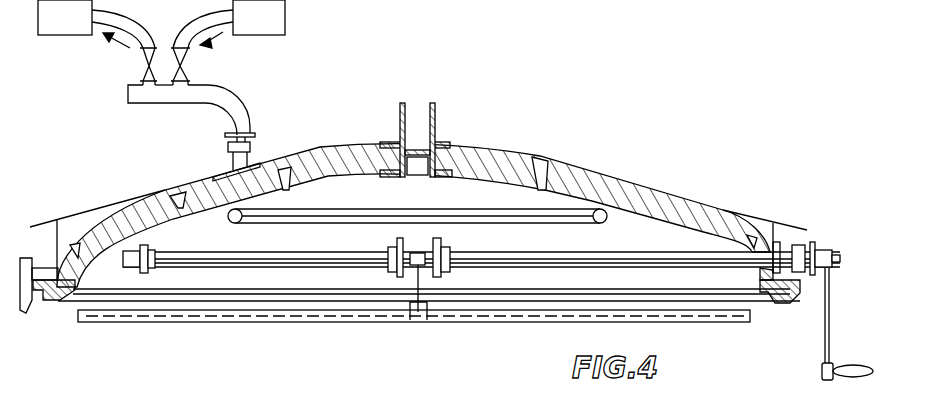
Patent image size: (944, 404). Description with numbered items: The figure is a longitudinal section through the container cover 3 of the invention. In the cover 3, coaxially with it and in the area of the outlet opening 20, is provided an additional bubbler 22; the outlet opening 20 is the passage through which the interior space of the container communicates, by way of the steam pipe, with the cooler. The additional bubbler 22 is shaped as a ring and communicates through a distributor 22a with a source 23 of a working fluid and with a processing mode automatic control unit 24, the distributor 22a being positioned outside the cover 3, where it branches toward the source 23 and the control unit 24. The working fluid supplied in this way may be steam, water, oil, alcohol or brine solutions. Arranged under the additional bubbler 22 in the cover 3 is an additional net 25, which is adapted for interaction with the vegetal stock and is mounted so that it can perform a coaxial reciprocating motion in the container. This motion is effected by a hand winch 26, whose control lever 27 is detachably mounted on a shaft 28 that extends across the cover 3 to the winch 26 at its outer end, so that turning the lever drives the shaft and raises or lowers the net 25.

The cover 3 is at (590, 187).
The outlet opening 20 is at (418, 167).
The additional bubbler 22 is at (306, 208).
The distributor 22a is at (178, 93).
The source of a working fluid 23 is at (259, 17).
The processing mode automatic control unit 24 is at (65, 17).
The additional net 25 is at (208, 322).
The hand winch 26 is at (822, 246).
The crank handle 27 is at (823, 329).
The shaft 28 is at (685, 250).